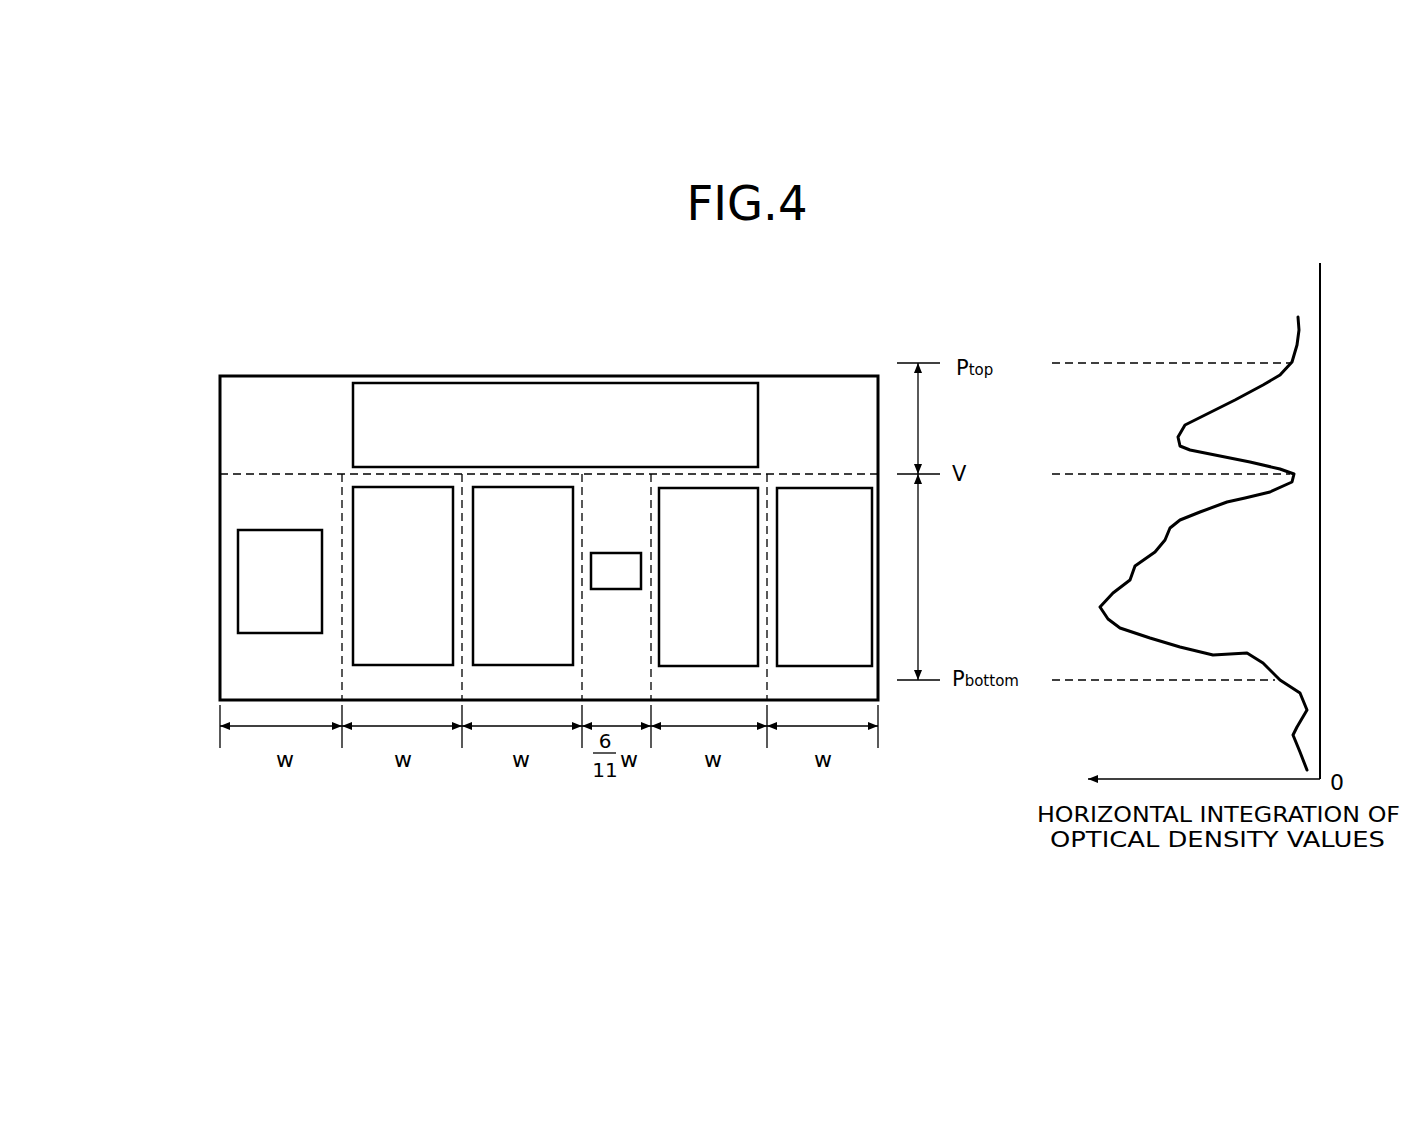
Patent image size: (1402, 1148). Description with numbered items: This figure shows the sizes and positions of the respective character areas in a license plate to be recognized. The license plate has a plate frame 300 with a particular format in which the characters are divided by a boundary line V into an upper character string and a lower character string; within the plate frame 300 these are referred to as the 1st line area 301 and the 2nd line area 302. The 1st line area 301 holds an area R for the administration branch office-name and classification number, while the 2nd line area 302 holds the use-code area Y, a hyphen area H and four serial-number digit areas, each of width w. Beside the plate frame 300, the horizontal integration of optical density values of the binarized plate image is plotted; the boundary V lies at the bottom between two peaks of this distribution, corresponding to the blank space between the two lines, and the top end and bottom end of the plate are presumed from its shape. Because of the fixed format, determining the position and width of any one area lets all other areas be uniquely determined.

The plate frame 300 is at (471, 375).
The 1st line area 301 is at (189, 474).
The 2nd line area 302 is at (189, 700).